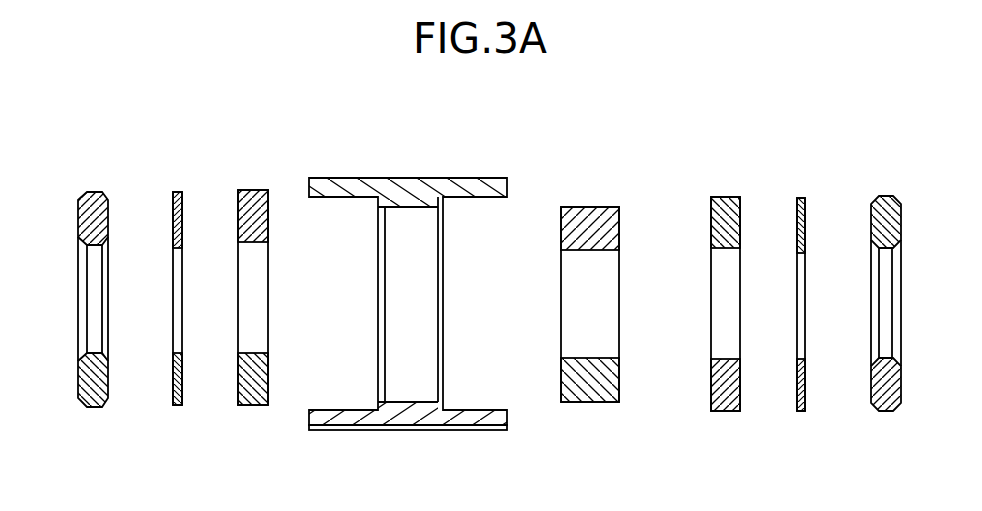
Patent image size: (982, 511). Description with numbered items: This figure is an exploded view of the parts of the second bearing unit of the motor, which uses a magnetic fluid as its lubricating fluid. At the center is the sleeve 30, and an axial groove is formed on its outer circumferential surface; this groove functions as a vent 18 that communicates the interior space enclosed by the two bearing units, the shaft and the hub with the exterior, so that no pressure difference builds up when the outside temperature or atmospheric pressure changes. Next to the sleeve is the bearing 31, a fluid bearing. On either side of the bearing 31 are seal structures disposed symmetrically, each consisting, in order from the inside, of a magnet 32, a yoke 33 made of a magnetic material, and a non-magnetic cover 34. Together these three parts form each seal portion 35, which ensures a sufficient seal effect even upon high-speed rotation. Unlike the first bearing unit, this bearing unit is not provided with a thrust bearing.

The vent 18 is at (443, 429).
The sleeve 30 is at (425, 187).
The bearing 31 is at (594, 220).
The magnet 32 is at (248, 189).
The yoke 33 is at (175, 190).
The non-magnetic cover 34 is at (92, 190).
The seal portion 35 is at (67, 441).